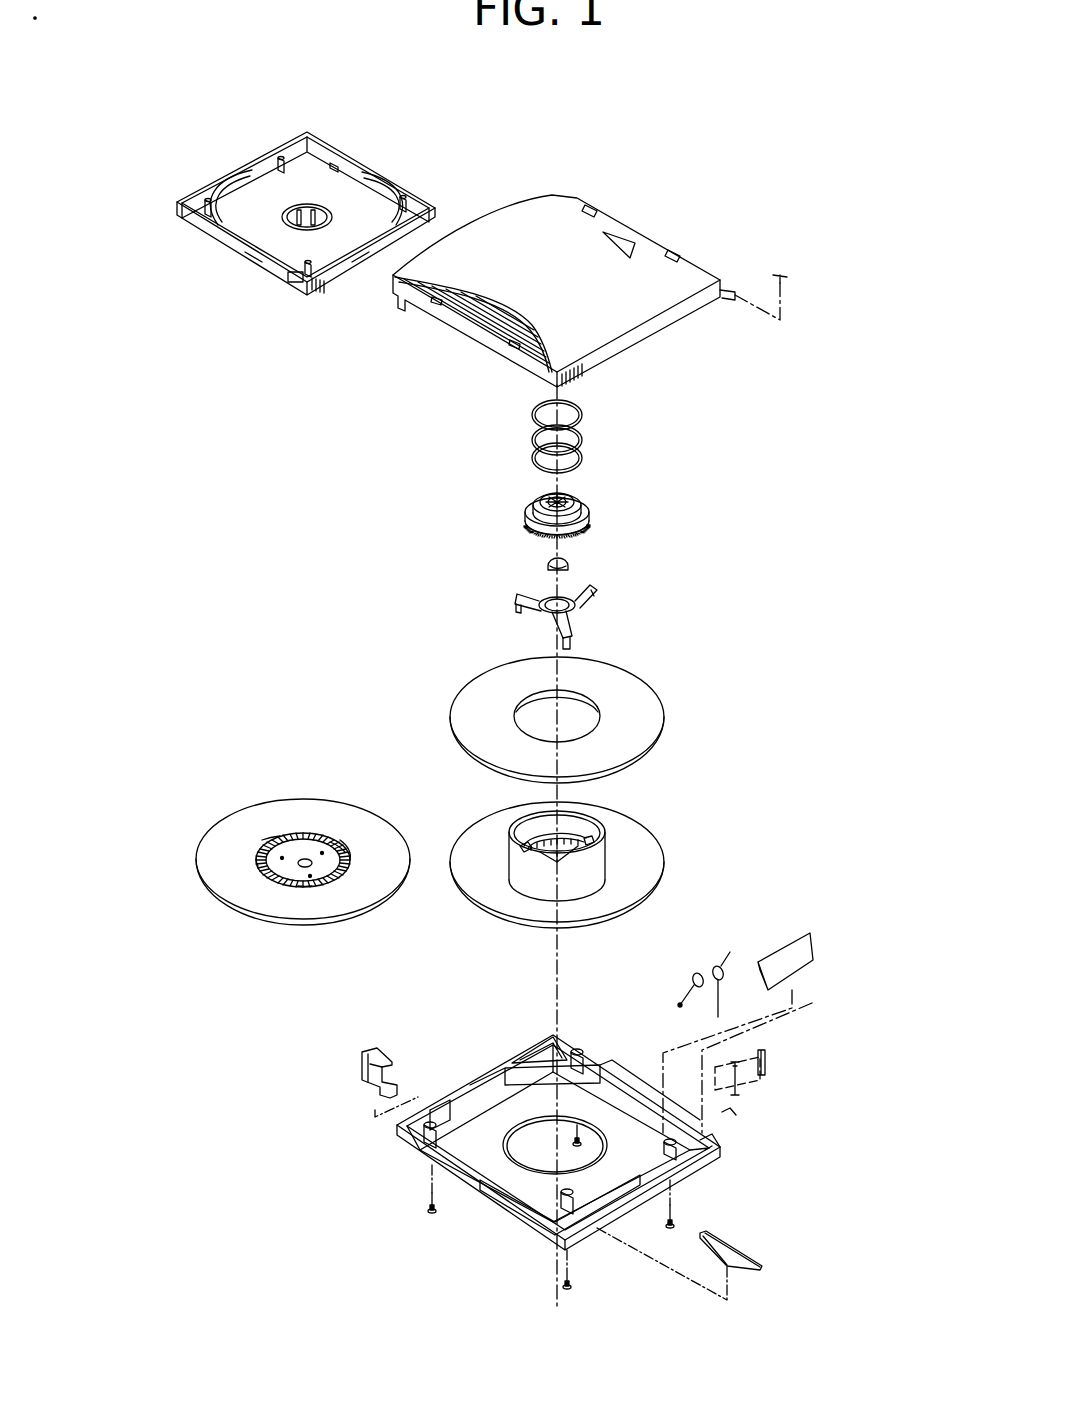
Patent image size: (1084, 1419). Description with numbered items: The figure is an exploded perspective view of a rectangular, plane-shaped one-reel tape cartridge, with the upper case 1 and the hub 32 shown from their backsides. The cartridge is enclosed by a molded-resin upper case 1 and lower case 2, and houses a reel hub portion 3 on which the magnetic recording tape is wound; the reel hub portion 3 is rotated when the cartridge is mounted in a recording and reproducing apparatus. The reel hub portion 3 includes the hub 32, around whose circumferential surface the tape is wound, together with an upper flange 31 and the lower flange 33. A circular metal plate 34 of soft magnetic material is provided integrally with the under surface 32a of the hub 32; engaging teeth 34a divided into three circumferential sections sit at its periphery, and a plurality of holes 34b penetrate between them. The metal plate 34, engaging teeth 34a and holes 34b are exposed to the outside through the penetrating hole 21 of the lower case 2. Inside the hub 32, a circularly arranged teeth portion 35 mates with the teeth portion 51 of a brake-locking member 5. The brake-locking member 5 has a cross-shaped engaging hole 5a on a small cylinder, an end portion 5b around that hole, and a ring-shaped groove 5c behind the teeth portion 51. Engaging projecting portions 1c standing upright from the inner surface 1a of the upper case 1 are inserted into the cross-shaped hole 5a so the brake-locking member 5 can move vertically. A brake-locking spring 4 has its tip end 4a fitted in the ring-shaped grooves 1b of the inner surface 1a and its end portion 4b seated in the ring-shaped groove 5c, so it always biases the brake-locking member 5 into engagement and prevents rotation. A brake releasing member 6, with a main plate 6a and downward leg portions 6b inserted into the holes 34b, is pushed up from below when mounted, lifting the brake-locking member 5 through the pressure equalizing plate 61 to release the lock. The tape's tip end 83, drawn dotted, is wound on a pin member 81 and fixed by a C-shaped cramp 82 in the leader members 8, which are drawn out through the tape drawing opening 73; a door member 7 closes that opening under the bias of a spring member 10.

The upper case 1 is at (798, 410).
The inner surface 1a is at (360, 200).
The ring-shaped grooves 1b is at (283, 225).
The engaging projecting portions 1c is at (332, 228).
The lower case 2 is at (488, 1207).
The reel hub portion 3 is at (722, 892).
The brake-locking spring 4 is at (597, 443).
The tip end 4a is at (583, 420).
The end portion 4b is at (582, 462).
The brake-locking member 5 is at (600, 512).
The cross-shaped engaging hole 5a is at (578, 500).
The end portion 5b is at (545, 505).
The ring-shaped groove 5c is at (532, 515).
The teeth portion 51 is at (583, 535).
The brake releasing member 6 is at (575, 620).
The main plate 6a is at (583, 598).
The leg portions 6b is at (545, 638).
The pressure equalizing plate 61 is at (547, 568).
The door member 7 is at (810, 945).
The leader members 8 is at (740, 1095).
The spring member 10 is at (700, 985).
The penetrating hole 21 is at (525, 1150).
The upper disc 31 is at (465, 700).
The hub 32 is at (510, 855).
The under surface 32a is at (349, 849).
The lower flange 33 is at (490, 889).
The metal plate 34 is at (303, 848).
The engaging teeth 34a is at (280, 825).
The holes 34b is at (335, 845).
The teeth portion 35 is at (575, 842).
The tape drawing opening 73 is at (717, 1160).
The pin member 81 is at (738, 1060).
The C-shaped cramp 82 is at (795, 1055).
The tip end 83 is at (790, 1078).